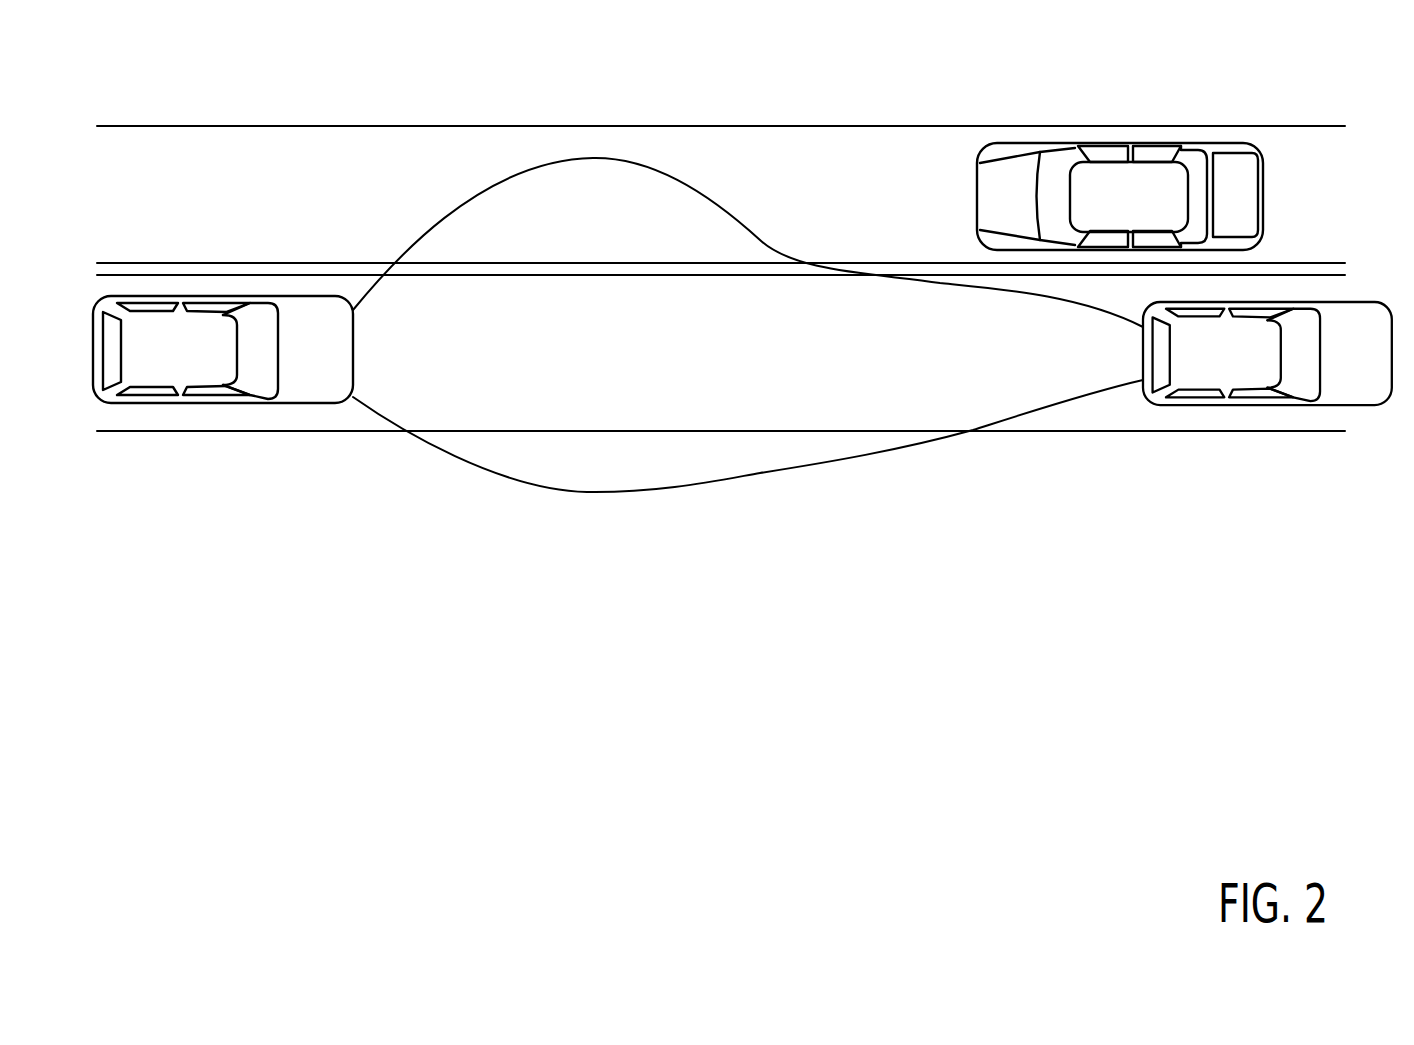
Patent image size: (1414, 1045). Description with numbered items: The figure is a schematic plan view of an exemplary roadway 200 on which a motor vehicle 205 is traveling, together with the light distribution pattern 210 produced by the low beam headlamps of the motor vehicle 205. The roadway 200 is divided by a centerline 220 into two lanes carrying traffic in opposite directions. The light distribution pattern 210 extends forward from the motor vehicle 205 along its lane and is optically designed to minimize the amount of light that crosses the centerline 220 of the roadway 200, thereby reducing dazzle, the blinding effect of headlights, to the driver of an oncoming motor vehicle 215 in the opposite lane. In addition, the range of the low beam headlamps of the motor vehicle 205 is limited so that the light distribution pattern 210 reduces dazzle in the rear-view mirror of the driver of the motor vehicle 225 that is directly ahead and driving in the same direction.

The roadway 200 is at (143, 160).
The motor vehicle 205 is at (257, 402).
The light distribution pattern 210 is at (790, 473).
The oncoming motor vehicle 215 is at (1020, 140).
The centerline 220 is at (243, 267).
The motor vehicle directly ahead 225 is at (1265, 402).